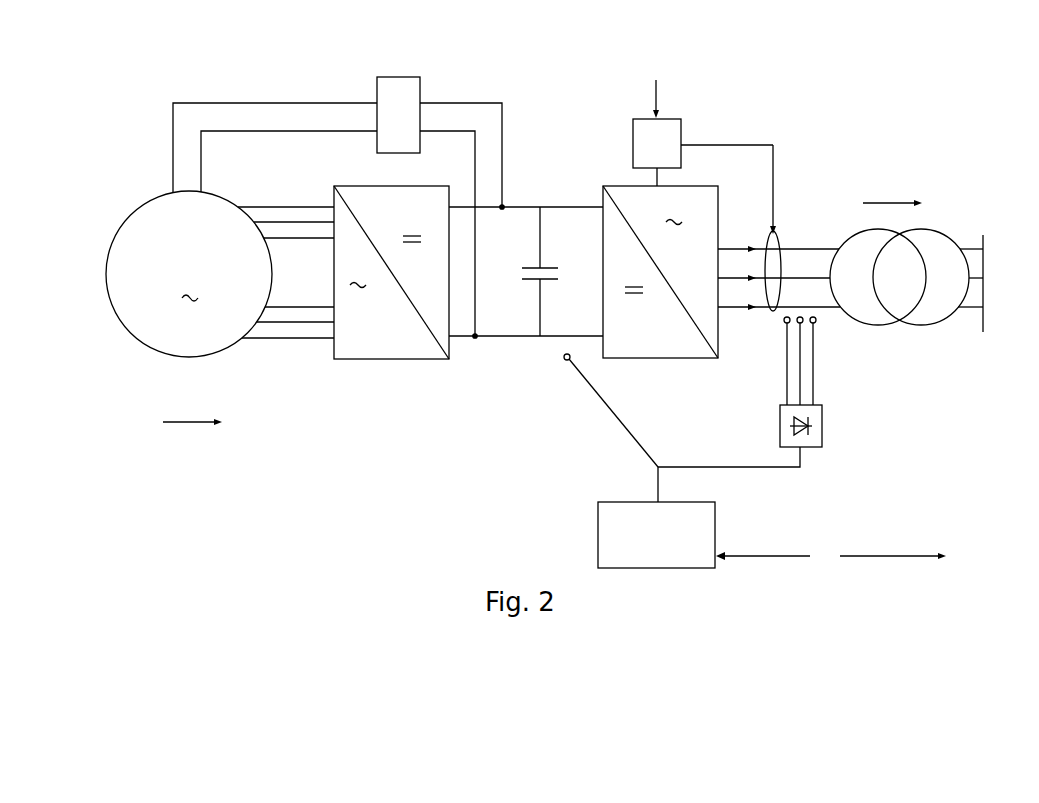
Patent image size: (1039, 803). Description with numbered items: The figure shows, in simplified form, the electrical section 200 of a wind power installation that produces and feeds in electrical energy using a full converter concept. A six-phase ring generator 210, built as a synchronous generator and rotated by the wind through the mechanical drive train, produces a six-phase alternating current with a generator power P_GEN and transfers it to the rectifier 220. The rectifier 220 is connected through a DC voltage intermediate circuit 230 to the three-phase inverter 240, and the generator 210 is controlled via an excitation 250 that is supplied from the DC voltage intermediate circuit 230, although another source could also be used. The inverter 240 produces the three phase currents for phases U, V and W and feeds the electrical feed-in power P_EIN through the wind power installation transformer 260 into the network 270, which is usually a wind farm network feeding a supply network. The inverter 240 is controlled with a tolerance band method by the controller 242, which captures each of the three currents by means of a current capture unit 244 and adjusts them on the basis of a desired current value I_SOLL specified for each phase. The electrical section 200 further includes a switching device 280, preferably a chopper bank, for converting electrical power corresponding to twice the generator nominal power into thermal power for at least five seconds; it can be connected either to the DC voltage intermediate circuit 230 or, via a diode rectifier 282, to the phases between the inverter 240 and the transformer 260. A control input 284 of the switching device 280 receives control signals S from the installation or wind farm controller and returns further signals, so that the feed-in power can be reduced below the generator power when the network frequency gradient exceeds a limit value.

The electrical section 200 is at (773, 96).
The six-phase ring generator 210 is at (222, 352).
The rectifier 220 is at (390, 360).
The DC voltage intermediate circuit 230 is at (515, 356).
The three-phase inverter 240 is at (640, 360).
The controller 242 is at (671, 122).
The current capture unit 244 is at (777, 232).
The excitation 250 is at (405, 77).
The wind power installation transformer 260 is at (862, 337).
The network 270 is at (980, 330).
The switching device 280 is at (728, 536).
The diode rectifier 282 is at (822, 443).
The control input 284 is at (716, 560).